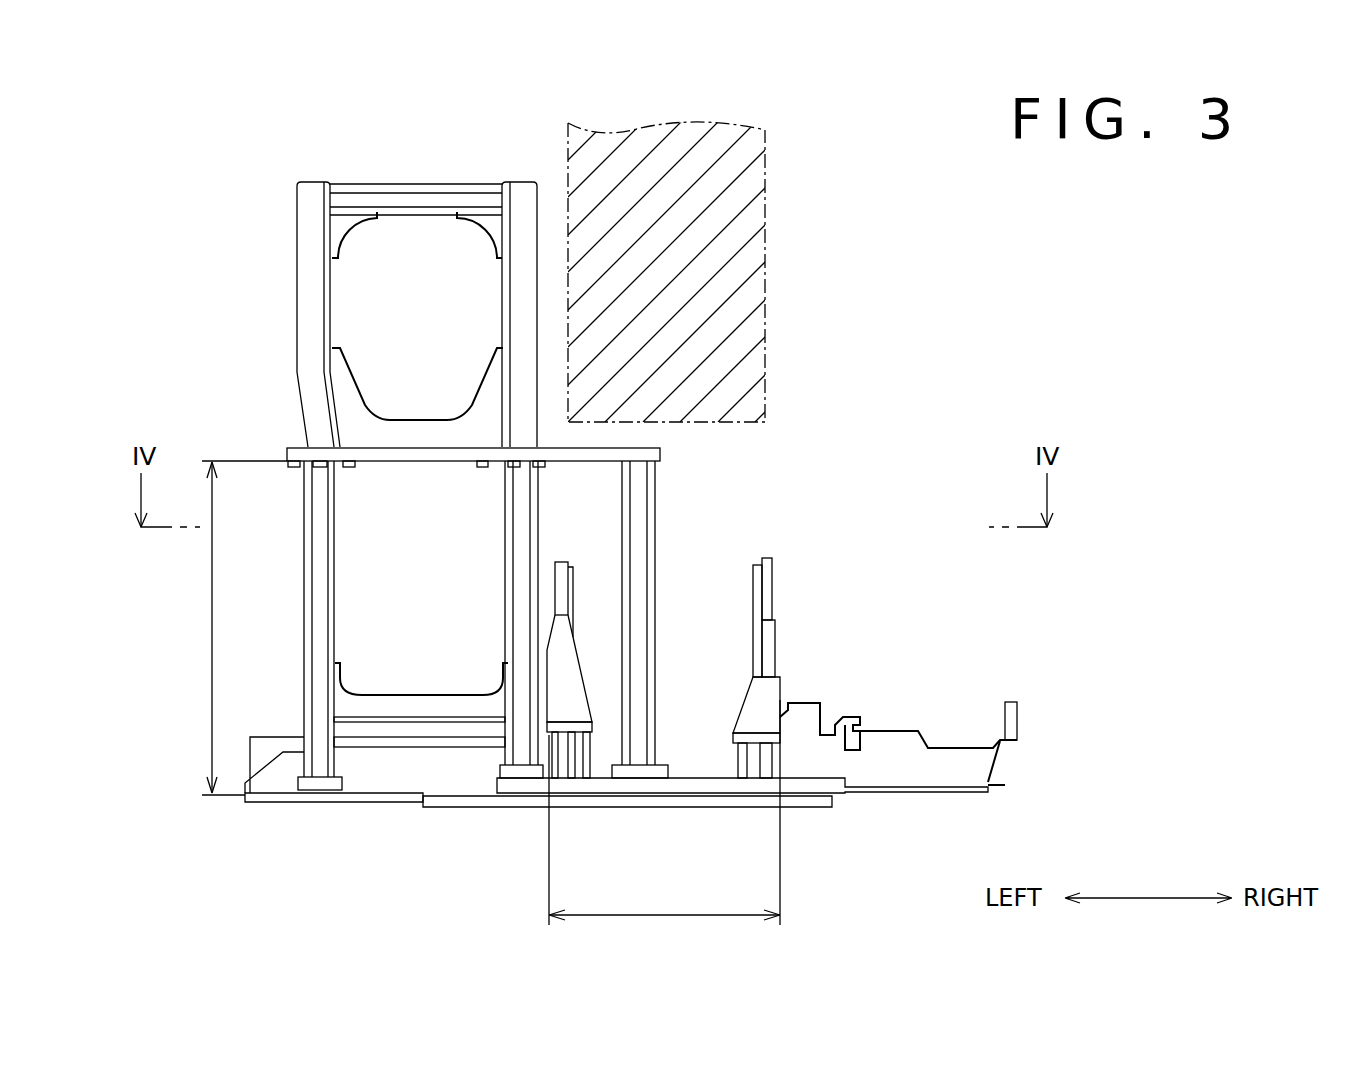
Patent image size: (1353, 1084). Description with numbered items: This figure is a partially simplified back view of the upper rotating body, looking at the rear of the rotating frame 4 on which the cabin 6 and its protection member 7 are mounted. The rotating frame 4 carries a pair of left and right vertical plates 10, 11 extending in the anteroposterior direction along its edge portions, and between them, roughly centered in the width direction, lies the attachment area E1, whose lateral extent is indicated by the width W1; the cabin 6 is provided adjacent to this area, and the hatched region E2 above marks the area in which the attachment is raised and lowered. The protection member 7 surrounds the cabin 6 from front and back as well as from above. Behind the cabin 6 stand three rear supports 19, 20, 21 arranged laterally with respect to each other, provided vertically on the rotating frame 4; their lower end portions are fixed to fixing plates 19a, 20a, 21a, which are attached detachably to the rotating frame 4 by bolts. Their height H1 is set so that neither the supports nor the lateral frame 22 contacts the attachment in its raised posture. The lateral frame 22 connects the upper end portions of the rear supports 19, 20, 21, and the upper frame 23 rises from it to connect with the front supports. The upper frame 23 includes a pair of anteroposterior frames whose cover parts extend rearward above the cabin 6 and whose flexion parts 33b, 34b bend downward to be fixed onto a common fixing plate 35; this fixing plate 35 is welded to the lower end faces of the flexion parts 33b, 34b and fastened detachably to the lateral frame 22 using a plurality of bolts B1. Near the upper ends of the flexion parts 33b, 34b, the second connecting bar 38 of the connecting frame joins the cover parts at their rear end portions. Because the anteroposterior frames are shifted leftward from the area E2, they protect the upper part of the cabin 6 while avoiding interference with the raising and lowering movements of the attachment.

The protection member 7 is at (185, 357).
The cabin 6 is at (362, 331).
The upper frame 23 is at (386, 178).
The second connecting bar 38 is at (440, 205).
The flexion part 33b is at (315, 272).
The flexion part 34b is at (520, 294).
The fixing plate 35 is at (300, 448).
The lateral frame 22 is at (640, 449).
The bolts B1 is at (320, 467).
The rear support 19 is at (323, 593).
The rear support 20 is at (522, 593).
The rear support 21 is at (640, 487).
The fixing plate 19a is at (320, 790).
The fixing plate 20a is at (515, 780).
The fixing plate 21a is at (637, 780).
The vertical plate 10 is at (565, 597).
The vertical plate 11 is at (773, 597).
The attachment area E1 is at (693, 622).
The area where the attachment is raised and lowered E2 is at (765, 247).
The rotating frame 4 is at (940, 800).
The height of the rear supports H1 is at (228, 628).
The width of the attachment area W1 is at (664, 812).